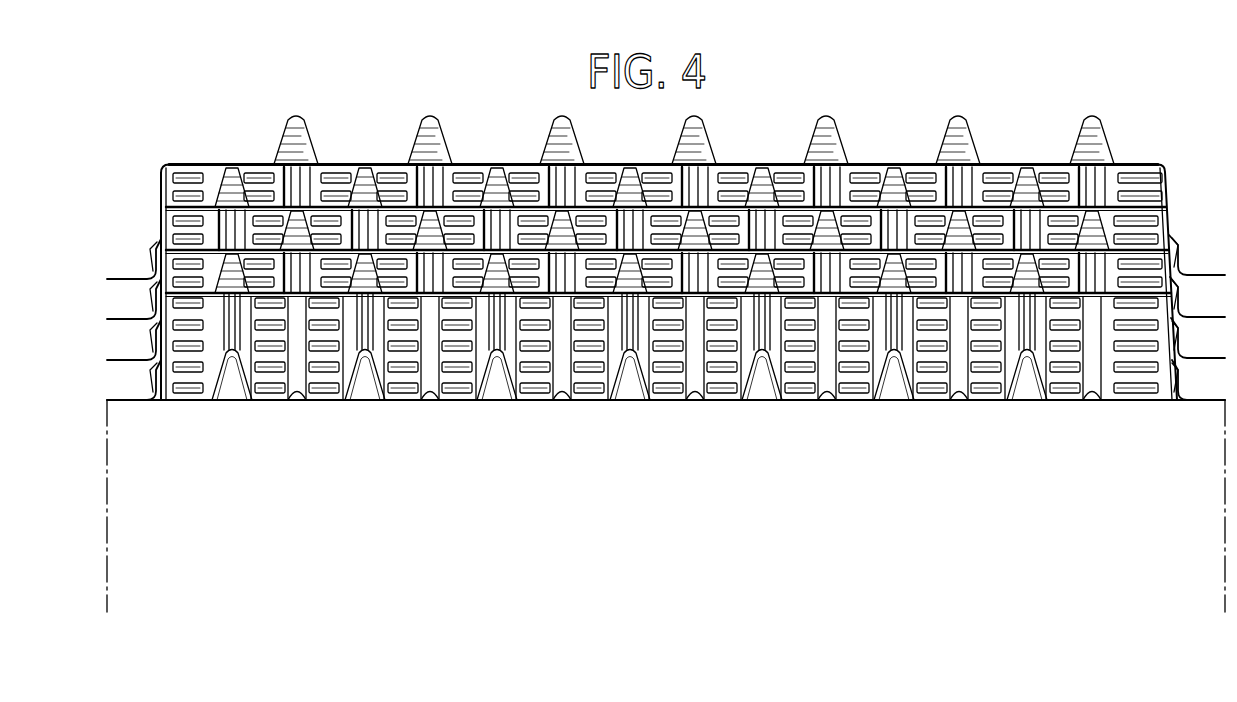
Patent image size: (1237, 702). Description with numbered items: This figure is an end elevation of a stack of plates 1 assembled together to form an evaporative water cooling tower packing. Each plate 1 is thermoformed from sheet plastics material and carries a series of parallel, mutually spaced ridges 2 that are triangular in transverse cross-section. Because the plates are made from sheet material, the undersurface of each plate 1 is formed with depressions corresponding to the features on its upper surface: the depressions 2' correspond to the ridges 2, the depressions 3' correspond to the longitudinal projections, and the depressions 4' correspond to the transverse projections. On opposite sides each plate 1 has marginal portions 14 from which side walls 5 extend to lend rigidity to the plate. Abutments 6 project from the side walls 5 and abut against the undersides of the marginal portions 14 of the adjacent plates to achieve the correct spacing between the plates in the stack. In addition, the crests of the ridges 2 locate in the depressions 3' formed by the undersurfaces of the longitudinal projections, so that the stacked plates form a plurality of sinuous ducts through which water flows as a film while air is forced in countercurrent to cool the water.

The plate 1 is at (200, 162).
The ridge 2 is at (664, 204).
The depression corresponding to ridge 2' is at (662, 202).
The depression corresponding to longitudinal projection 3' is at (665, 373).
The depression corresponding to transverse projection 4' is at (667, 199).
The side wall 5 is at (163, 185).
The abutment 6 is at (152, 247).
The marginal portion 14 is at (130, 278).